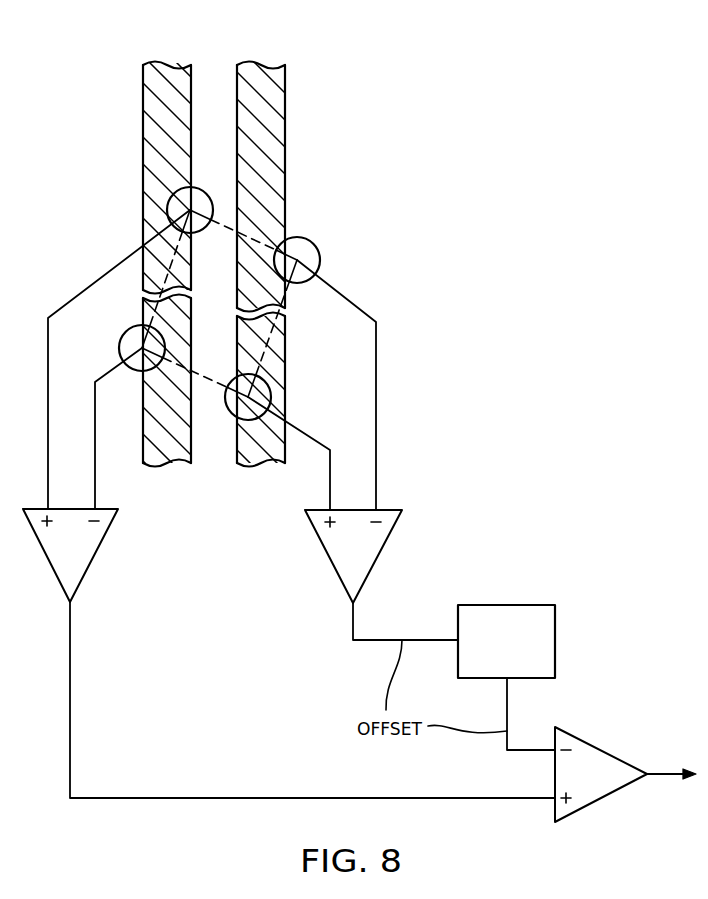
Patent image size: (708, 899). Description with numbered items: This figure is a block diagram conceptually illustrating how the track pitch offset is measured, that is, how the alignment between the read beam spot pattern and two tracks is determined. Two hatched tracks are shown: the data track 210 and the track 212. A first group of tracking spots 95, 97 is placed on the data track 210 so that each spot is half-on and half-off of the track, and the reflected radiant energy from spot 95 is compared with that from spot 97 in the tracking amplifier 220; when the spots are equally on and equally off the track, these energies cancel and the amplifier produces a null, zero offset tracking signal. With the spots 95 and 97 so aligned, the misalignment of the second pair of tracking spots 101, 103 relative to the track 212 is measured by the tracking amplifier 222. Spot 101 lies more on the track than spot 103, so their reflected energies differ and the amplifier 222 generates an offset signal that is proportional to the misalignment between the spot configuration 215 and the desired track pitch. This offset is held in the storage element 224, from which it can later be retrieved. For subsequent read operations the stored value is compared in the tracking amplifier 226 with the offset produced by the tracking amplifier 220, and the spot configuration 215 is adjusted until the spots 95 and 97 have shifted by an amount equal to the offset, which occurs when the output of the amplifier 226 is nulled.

The data track 210 is at (172, 63).
The track 212 is at (258, 63).
The tracking spot 95 is at (197, 188).
The tracking spot 97 is at (119, 348).
The tracking spot 101 is at (272, 383).
The tracking spot 103 is at (318, 248).
The spot configuration 215 is at (141, 246).
The tracking amplifier 220 is at (95, 560).
The tracking amplifier 222 is at (332, 562).
The storage element 224 is at (555, 640).
The tracking amplifier 226 is at (600, 745).